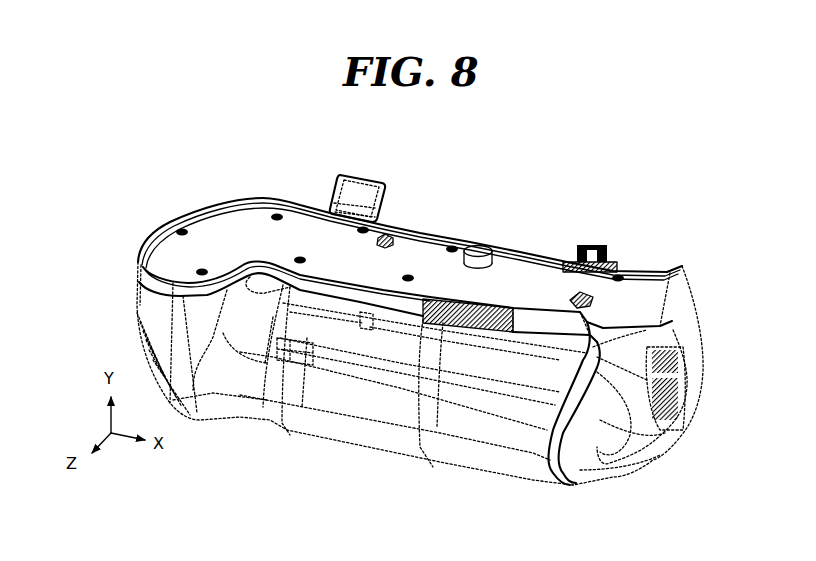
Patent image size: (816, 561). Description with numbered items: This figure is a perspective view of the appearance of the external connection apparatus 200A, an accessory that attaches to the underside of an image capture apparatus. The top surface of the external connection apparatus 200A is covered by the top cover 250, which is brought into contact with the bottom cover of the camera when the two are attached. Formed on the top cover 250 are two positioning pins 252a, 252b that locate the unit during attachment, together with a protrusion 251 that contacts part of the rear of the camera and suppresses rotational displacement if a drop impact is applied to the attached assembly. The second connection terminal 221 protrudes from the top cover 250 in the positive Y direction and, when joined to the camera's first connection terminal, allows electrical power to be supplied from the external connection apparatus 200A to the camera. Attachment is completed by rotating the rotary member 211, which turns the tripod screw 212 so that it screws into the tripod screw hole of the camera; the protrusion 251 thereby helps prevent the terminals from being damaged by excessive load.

The external connection apparatus 200A is at (128, 197).
The top cover 250 is at (234, 206).
The protrusion 251 is at (343, 178).
The positioning pin 252a is at (388, 232).
The positioning pin 252b is at (587, 291).
The tripod screw 212 is at (487, 246).
The rotary member 211 is at (481, 303).
The second connection terminal 221 is at (590, 246).